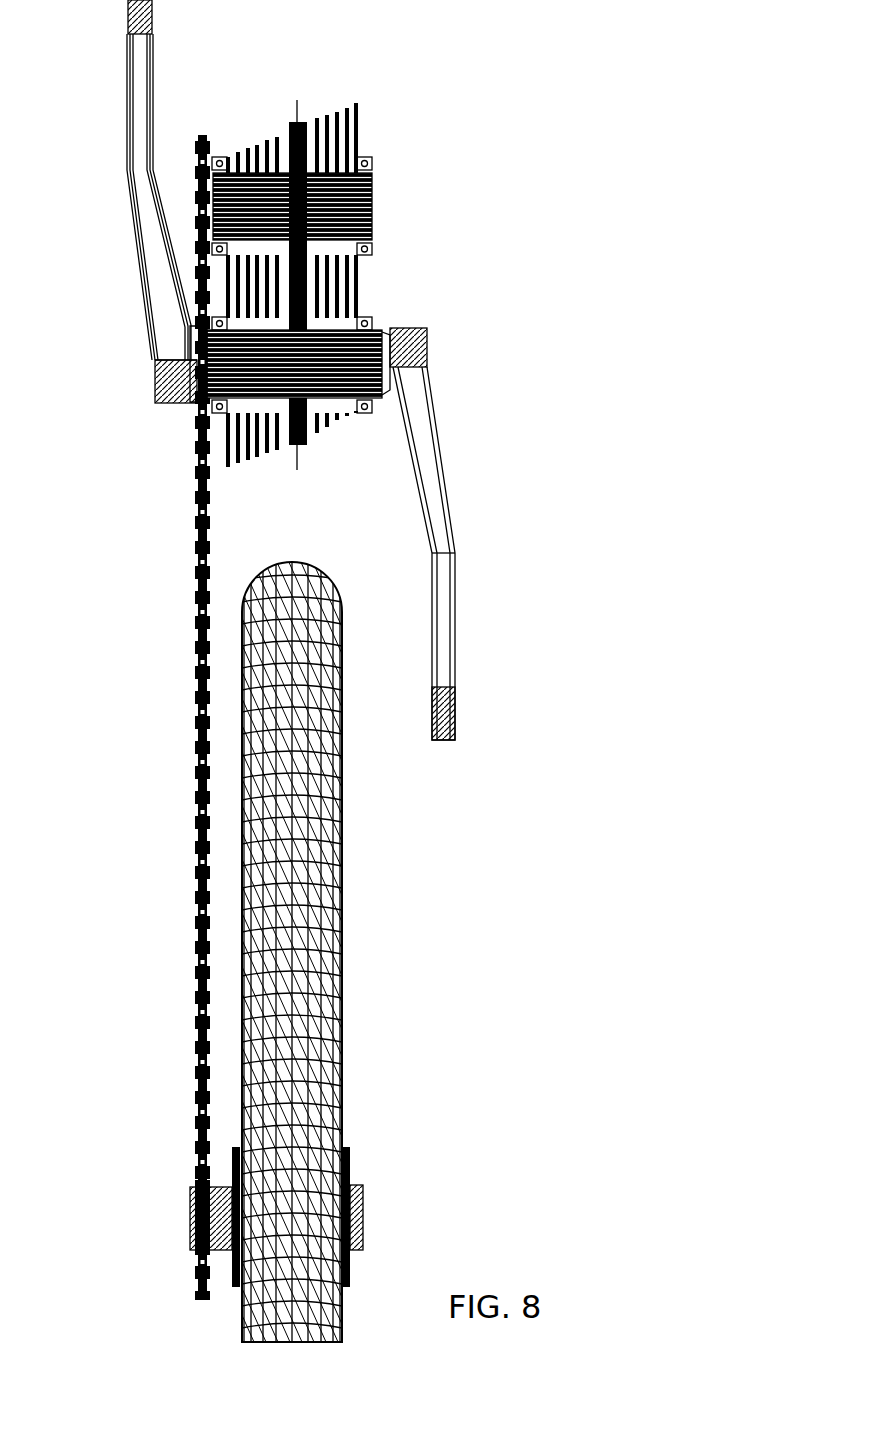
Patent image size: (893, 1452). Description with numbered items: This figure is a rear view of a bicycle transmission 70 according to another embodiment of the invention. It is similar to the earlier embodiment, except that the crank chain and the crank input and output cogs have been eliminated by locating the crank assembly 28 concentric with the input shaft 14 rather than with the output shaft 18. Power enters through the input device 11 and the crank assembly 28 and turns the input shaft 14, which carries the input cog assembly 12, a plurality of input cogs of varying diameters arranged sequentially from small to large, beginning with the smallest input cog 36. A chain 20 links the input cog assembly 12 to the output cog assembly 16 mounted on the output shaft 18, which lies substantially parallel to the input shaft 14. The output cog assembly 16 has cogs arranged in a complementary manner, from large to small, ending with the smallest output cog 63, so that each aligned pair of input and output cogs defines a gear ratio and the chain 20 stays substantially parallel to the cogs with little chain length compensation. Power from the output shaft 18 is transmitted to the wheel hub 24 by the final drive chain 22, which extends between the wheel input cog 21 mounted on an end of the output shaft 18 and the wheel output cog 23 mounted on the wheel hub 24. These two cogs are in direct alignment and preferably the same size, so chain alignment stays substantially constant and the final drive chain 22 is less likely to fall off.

The input device 11 is at (481, 546).
The input cog assembly 12 is at (333, 440).
The input shaft 14 is at (370, 325).
The output cog assembly 16 is at (275, 299).
The output shaft 18 is at (372, 207).
The chain 20 is at (300, 288).
The wheel input cog 21 is at (200, 207).
The final drive chain 22 is at (196, 528).
The wheel output cog 23 is at (196, 1217).
The wheel hub 24 is at (196, 1238).
The crank assembly 28 is at (443, 446).
The input cog 36 is at (355, 140).
The output cog 63 is at (220, 430).
The bicycle transmission 70 is at (538, 527).